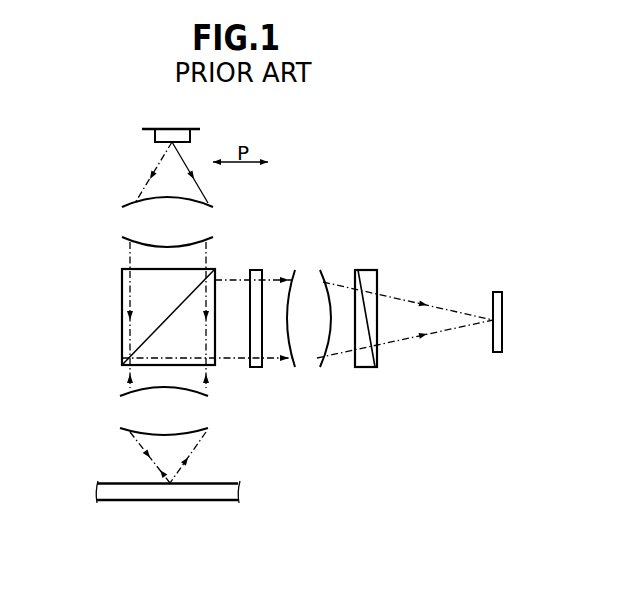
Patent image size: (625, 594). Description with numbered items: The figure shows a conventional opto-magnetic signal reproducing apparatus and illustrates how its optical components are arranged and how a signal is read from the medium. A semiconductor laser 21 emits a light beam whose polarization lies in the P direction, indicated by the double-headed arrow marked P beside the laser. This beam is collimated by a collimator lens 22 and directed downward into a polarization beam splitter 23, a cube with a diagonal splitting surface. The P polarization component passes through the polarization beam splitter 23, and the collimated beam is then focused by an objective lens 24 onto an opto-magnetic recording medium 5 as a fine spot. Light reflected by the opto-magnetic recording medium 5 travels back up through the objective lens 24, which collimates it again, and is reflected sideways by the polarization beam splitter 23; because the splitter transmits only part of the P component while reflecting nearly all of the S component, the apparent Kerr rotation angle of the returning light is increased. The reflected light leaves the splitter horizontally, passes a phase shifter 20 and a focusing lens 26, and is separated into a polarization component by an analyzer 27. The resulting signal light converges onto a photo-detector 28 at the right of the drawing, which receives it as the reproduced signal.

The semiconductor laser 21 is at (183, 136).
The collimator lens 22 is at (203, 226).
The polarization beam splitter 23 is at (122, 323).
The phase shifter 20 is at (258, 268).
The focusing lens 26 is at (310, 276).
The analyzer 27 is at (373, 268).
The photo-detector 28 is at (498, 290).
The objective lens 24 is at (200, 416).
The opto-magnetic recording medium 5 is at (240, 491).